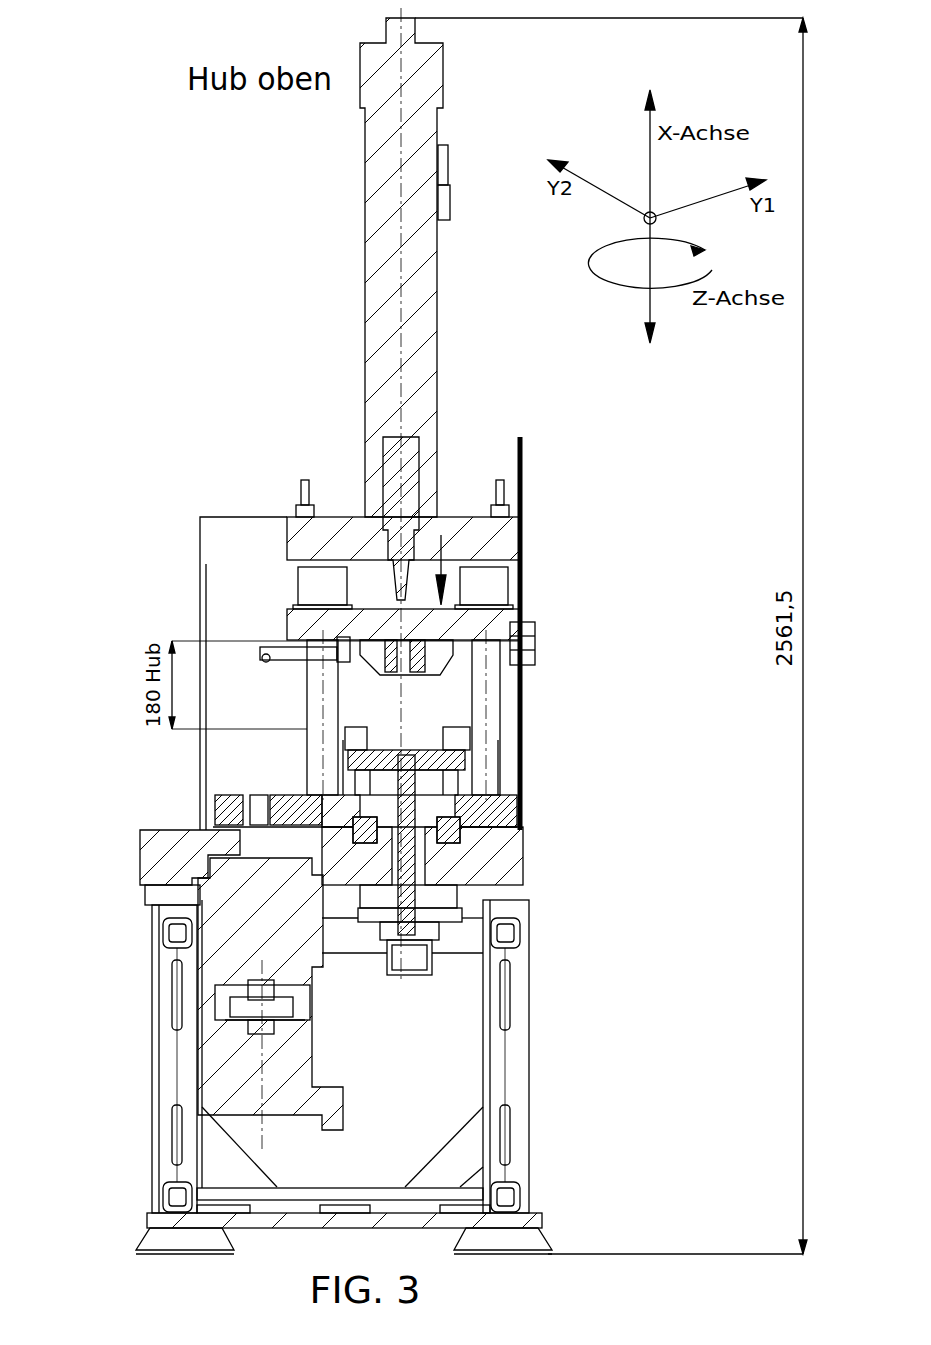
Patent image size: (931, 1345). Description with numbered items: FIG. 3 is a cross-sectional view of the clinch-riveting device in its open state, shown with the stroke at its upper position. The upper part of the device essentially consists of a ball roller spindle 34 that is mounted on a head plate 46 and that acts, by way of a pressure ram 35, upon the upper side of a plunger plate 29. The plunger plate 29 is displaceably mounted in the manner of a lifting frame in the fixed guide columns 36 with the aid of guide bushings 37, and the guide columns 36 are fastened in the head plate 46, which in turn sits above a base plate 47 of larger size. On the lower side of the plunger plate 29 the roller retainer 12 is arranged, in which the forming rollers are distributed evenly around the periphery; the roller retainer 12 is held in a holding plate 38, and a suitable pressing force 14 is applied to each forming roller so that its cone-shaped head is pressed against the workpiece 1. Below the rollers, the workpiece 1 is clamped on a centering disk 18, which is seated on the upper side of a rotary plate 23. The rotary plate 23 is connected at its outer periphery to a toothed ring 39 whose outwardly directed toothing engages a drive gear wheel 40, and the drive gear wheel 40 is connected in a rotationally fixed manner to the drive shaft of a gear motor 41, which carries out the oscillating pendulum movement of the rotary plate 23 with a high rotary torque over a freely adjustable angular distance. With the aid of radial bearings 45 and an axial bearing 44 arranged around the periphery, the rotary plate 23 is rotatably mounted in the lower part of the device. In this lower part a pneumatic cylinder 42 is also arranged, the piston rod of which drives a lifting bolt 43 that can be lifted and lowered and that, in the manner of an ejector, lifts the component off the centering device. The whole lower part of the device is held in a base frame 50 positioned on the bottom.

The workpiece 1 is at (453, 757).
The roller retainer 12 is at (440, 657).
The pressing force 14 is at (520, 557).
The centering disk 18 is at (455, 775).
The rotary plate 23 is at (460, 792).
The plunger plate 29 is at (470, 630).
The ball roller spindle 34 is at (395, 250).
The pressure ram 35 is at (390, 577).
The guide columns 36 is at (320, 688).
The guide bushings 37 is at (320, 595).
The holding plate 38 is at (522, 652).
The toothed ring 39 is at (330, 805).
The drive gear wheel 40 is at (227, 814).
The gear motor 41 is at (259, 897).
The pneumatic cylinder 42 is at (435, 950).
The lifting bolt 43 is at (445, 915).
The axial bearing 44 is at (462, 890).
The radial bearings 45 is at (480, 835).
The head plate 46 is at (483, 530).
The base plate 47 is at (470, 850).
The base frame 50 is at (512, 1090).